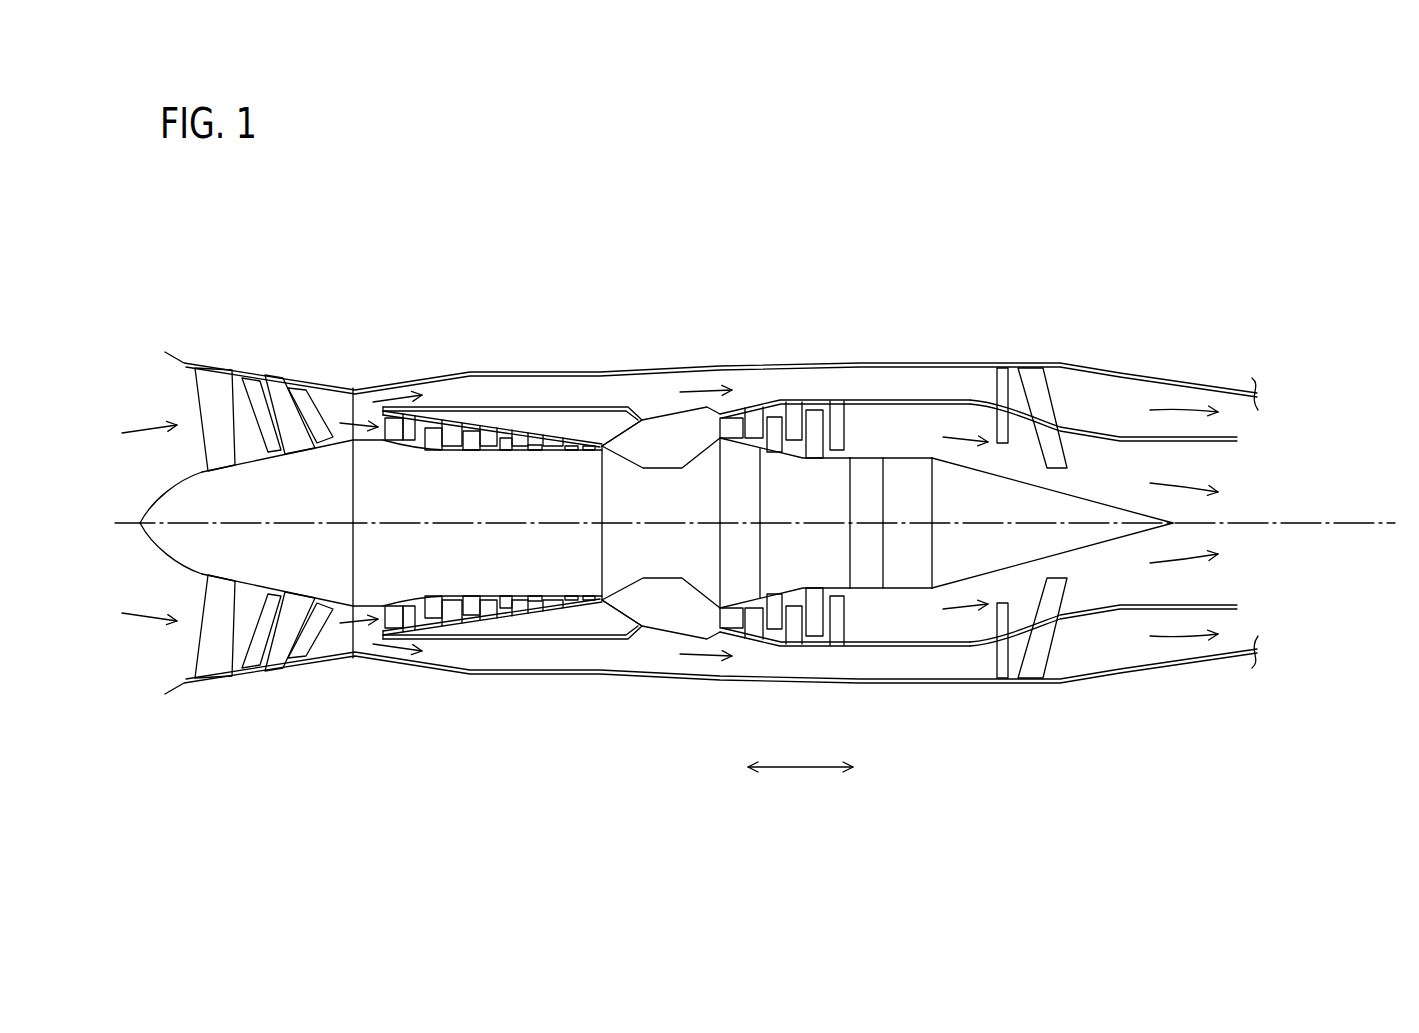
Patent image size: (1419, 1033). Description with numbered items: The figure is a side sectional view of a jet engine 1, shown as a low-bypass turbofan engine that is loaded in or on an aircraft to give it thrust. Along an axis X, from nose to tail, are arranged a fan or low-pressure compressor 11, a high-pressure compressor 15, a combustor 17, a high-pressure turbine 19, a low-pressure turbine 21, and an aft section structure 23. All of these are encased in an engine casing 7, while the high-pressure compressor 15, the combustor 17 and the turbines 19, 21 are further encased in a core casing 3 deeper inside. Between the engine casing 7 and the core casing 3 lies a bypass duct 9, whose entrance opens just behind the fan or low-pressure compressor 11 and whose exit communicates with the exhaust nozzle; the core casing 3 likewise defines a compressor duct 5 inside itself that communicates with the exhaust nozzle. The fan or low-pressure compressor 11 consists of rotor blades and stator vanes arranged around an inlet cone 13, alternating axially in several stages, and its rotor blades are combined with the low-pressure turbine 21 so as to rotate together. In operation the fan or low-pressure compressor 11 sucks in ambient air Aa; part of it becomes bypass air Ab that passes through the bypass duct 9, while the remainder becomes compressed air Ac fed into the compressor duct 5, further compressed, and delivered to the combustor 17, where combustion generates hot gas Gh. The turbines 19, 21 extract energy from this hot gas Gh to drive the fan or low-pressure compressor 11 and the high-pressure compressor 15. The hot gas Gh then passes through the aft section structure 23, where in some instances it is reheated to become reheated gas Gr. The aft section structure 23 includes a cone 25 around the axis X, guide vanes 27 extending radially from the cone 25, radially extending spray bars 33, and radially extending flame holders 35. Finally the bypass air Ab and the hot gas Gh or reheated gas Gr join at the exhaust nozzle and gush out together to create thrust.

The jet engine 1 is at (868, 246).
The core casing 3 is at (603, 404).
The compressor duct 5 is at (510, 440).
The engine casing 7 is at (494, 366).
The bypass duct 9 is at (560, 390).
The fan or low-pressure compressor 11 is at (254, 374).
The inlet cone 13 is at (148, 490).
The high-pressure compressor 15 is at (430, 421).
The combustor 17 is at (674, 437).
The high-pressure turbine 19 is at (737, 419).
The low-pressure turbine 21 is at (810, 405).
The aft section structure 23 is at (1267, 294).
The cone 25 is at (1064, 488).
The guide vanes 27 is at (935, 422).
The spray bars 33 is at (999, 368).
The flame holders 35 is at (1074, 435).
The ambient air Aa is at (137, 612).
The bypass air Ab is at (402, 654).
The compressed air Ac is at (347, 628).
The hot gas Gh is at (958, 614).
The reheated gas Gr is at (1163, 570).
The axis X is at (1304, 522).